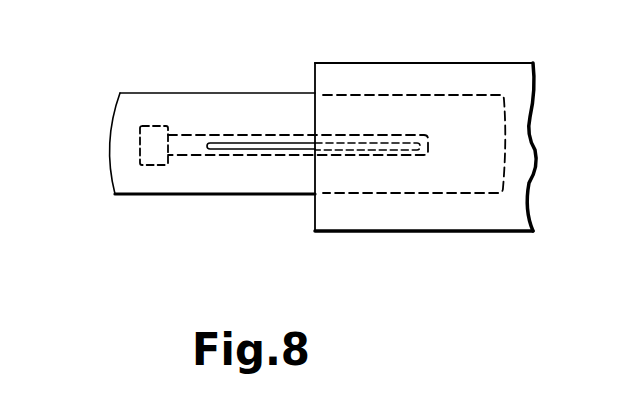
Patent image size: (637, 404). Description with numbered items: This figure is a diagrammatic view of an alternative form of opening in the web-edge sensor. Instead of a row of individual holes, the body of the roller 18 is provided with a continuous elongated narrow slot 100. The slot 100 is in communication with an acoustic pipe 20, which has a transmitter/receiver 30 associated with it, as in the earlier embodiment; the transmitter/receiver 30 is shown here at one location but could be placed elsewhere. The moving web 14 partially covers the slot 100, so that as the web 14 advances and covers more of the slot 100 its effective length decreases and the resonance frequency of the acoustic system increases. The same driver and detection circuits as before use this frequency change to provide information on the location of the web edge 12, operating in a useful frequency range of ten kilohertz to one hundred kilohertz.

The web edge 12 is at (352, 42).
The web 14 is at (581, 67).
The roller 18 is at (188, 66).
The acoustic pipe 20 is at (245, 110).
The transmitter/receiver 30 is at (138, 137).
The slot 100 is at (233, 149).